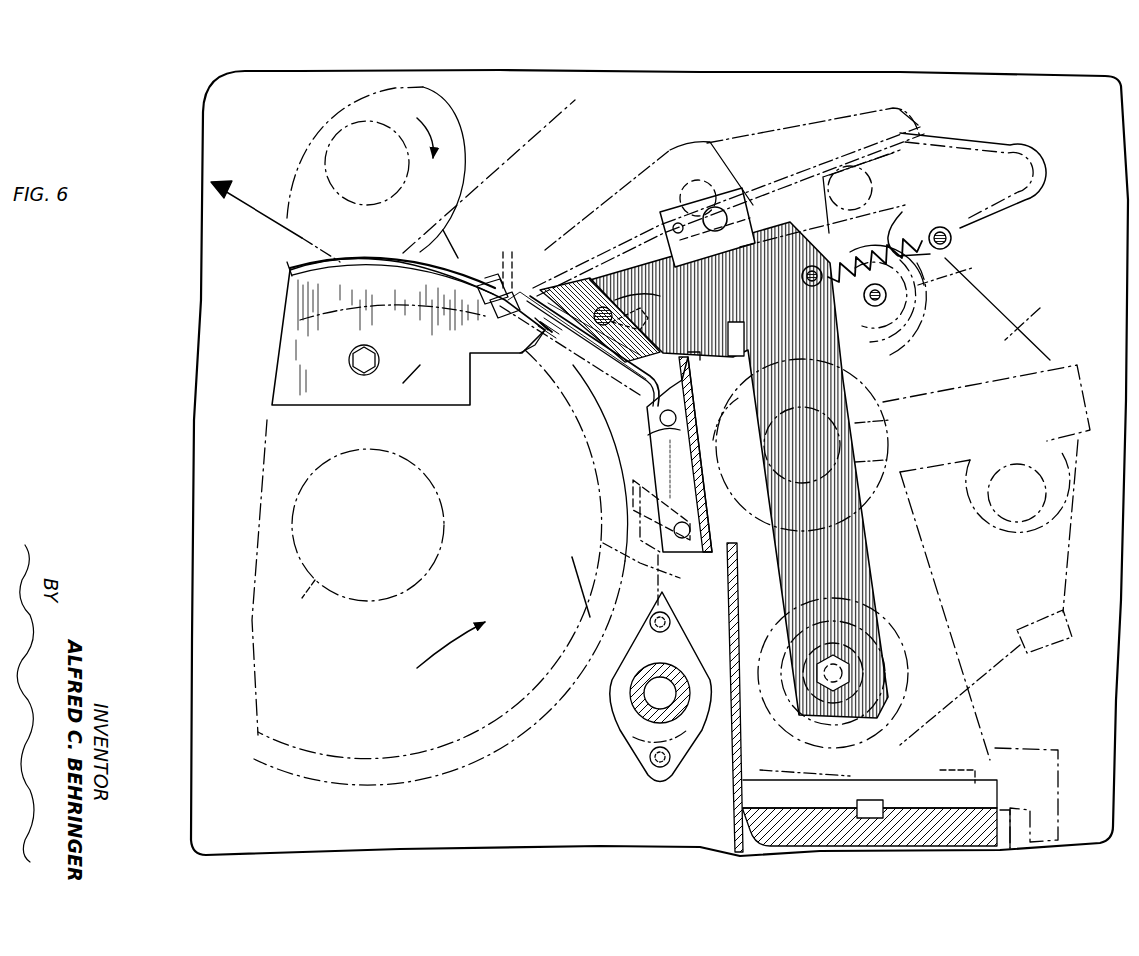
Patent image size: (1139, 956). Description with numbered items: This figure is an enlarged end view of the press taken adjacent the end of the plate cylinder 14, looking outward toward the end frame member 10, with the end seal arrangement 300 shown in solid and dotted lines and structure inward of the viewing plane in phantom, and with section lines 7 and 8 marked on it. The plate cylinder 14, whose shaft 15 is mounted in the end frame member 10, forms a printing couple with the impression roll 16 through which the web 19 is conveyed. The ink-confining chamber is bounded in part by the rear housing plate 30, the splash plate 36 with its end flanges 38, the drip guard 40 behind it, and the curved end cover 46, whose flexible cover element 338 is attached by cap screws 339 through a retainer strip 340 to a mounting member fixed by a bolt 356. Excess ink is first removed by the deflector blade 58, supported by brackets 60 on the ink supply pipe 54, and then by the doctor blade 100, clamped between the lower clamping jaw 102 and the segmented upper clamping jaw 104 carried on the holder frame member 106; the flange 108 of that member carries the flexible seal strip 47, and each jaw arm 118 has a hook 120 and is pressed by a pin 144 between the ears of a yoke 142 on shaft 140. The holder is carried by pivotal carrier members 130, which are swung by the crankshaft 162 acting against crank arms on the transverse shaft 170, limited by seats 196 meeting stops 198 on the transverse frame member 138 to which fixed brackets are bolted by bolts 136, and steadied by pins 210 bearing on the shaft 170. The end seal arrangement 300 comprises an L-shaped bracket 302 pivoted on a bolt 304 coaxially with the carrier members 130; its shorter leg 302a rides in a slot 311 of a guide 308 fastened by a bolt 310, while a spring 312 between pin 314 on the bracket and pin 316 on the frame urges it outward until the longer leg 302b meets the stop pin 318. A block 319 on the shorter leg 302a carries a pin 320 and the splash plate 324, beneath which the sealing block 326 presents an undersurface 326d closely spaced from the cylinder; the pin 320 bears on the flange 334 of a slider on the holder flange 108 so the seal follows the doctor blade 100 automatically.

The section line 7- 7 is at (664, 30).
The section line 8- 8 is at (445, 245).
The end frame member 10 is at (1082, 78).
The plate cylinder 14 is at (478, 780).
The shaft 15 is at (299, 602).
The impression roll 16 is at (322, 146).
The web 19 is at (253, 203).
The rear housing plate 30 is at (735, 800).
The splash plate 36 is at (658, 430).
The flange 38 is at (658, 462).
The drip guard 40 is at (720, 414).
The end cover 46 is at (352, 253).
The flexible seal strip 47 is at (700, 376).
The ink supply pipe 54 is at (632, 706).
The deflector blade 58 is at (630, 500).
The bracket 60 is at (604, 543).
The doctor blade 100 is at (518, 260).
The lower clamping jaw 102 is at (585, 276).
The upper clamping jaw 104 is at (657, 166).
The holder frame member 106 is at (718, 348).
The flange 108 is at (590, 336).
The rearwardly extending arm 118 is at (790, 140).
The hook 120 is at (1032, 173).
The carrier member 130 is at (986, 509).
The bolt 136 is at (937, 780).
The transverse frame member 138 is at (1000, 832).
The shaft 140 is at (961, 269).
The yoke 142 is at (940, 188).
The pin 144 is at (883, 203).
The crankshaft 162 is at (1017, 484).
The transverse shaft 170 is at (803, 432).
The seat 196 is at (1070, 626).
The stop 198 is at (1052, 752).
The pin 210 is at (872, 452).
The end seal arrangement 300 is at (555, 274).
The L-shaped bracket 302 is at (848, 358).
The shorter leg 302a is at (652, 260).
The longer leg 302b is at (866, 538).
The bolt 304 is at (842, 652).
The guide 308 is at (740, 196).
The bolt 310 is at (718, 207).
The slot 311 is at (754, 232).
The spring 312 is at (895, 241).
The pin 314 is at (802, 274).
The pin 316 is at (943, 228).
The stop pin 318 is at (884, 298).
The block 319 is at (641, 290).
The pin 320 is at (612, 316).
The splash plate 324 is at (575, 338).
The sealing block 326 is at (522, 322).
The undersurface 326d is at (545, 333).
The flange 334 is at (623, 350).
The flexible cover element 338 is at (303, 260).
The cap screw 339 is at (464, 243).
The retainer strip 340 is at (457, 262).
The bolt 356 is at (350, 360).